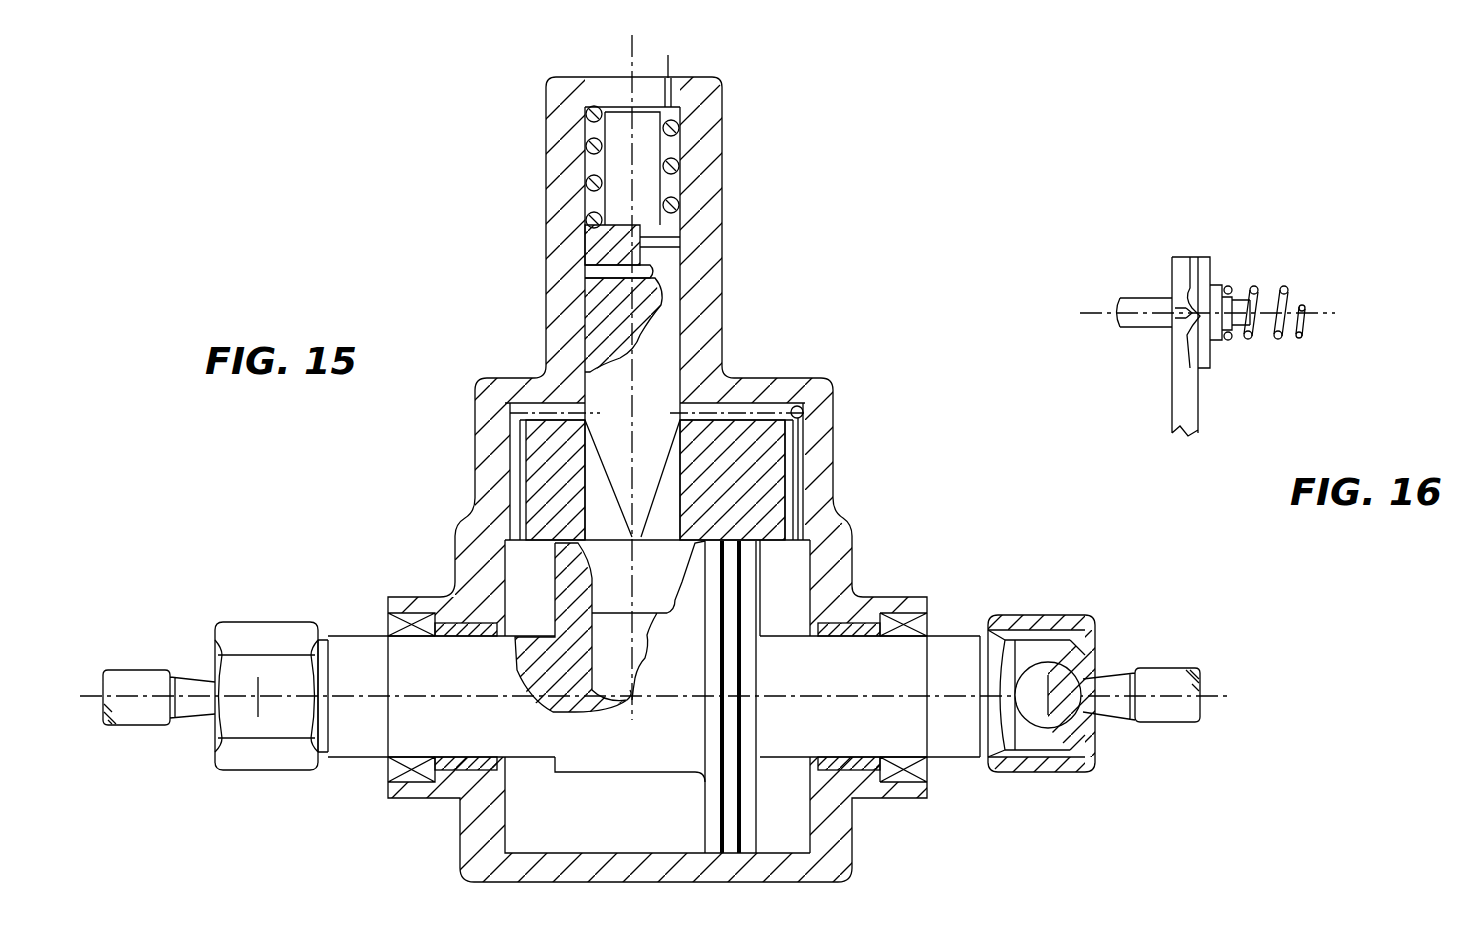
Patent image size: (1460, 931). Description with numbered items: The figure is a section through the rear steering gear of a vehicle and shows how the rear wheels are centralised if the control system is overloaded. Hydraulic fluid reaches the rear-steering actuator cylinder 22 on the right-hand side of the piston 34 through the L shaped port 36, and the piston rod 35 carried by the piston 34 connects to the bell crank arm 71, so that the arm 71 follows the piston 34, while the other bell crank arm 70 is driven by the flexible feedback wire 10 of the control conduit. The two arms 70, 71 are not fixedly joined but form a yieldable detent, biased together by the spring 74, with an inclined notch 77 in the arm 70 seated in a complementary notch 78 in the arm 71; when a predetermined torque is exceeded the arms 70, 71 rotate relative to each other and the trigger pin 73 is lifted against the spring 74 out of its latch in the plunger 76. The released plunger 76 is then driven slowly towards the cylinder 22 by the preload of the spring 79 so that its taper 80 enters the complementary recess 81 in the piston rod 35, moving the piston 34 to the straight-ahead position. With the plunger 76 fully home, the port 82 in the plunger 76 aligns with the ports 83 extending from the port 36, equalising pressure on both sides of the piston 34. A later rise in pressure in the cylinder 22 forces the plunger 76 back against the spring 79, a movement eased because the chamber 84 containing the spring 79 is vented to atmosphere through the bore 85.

In FIG. 15, the cable 10 is at (150, 680).
In FIG. 15, the rear-steering actuator cylinder 22 is at (535, 820).
In FIG. 15, the piston 34 is at (745, 825).
In FIG. 15, the piston rod 35 is at (352, 665).
In FIG. 15, the L shaped port 36 is at (800, 410).
In FIG. 16, the bell crank arm 70 is at (1210, 262).
In FIG. 16, the bell crank arm 71 is at (1183, 395).
In FIG. 16, the trigger pin 73 is at (1143, 298).
In FIG. 16, the spring 74 is at (1290, 290).
In FIG. 15, the plunger 76 is at (655, 365).
In FIG. 16, the notch 77 is at (1190, 290).
In FIG. 16, the complementary notch 78 is at (1185, 320).
In FIG. 15, the spring 79 is at (680, 180).
In FIG. 15, the taper 80 is at (600, 485).
In FIG. 15, the recess 81 is at (555, 572).
In FIG. 15, the port 82 is at (585, 266).
In FIG. 15, the ports 83 is at (540, 412).
In FIG. 15, the chamber 84 is at (675, 192).
In FIG. 15, the bore 85 is at (672, 74).